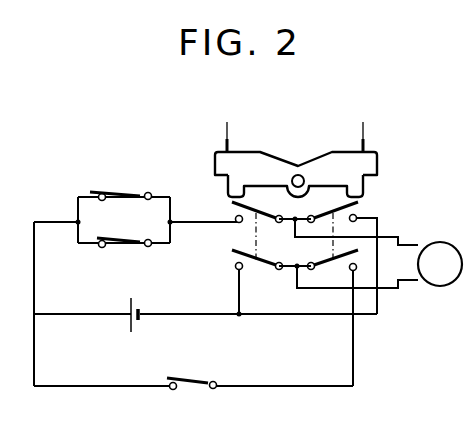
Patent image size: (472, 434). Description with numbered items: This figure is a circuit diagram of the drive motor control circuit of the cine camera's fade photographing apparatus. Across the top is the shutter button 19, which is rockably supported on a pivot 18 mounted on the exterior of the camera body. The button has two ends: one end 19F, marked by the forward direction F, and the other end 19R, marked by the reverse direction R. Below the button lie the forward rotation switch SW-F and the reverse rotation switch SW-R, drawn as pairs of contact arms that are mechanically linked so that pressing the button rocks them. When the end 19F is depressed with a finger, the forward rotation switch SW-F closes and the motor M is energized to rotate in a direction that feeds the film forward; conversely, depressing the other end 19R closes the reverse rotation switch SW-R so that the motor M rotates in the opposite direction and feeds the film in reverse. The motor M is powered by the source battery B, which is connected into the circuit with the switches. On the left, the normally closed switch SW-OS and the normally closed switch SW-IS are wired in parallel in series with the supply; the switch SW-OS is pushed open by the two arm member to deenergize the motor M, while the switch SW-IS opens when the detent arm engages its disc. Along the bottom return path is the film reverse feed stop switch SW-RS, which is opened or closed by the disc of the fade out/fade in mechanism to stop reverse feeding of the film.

The shutter button 19 is at (290, 166).
The one end of shutter button 19F is at (214, 163).
The other end of shutter button 19R is at (378, 163).
The pivot 18 is at (304, 179).
The forward direction F is at (227, 123).
The reverse direction R is at (363, 124).
The normally closed switch SW-OS is at (127, 193).
The normally closed switch SW-IS is at (113, 245).
The forward rotation switch SW-F is at (234, 235).
The reverse rotation switch SW-R is at (364, 209).
The film reverse feed stop switch SW-RS is at (190, 389).
The source battery B is at (137, 328).
The motor M is at (440, 264).